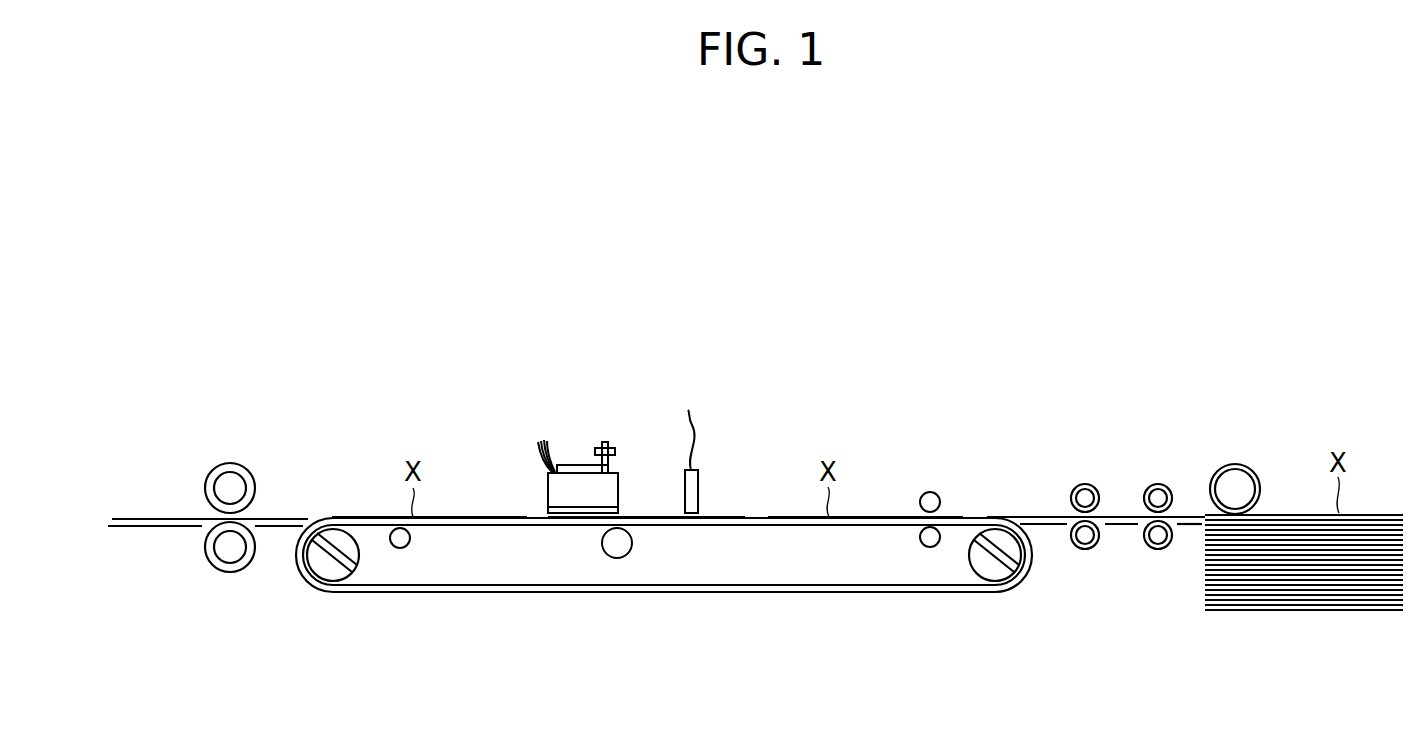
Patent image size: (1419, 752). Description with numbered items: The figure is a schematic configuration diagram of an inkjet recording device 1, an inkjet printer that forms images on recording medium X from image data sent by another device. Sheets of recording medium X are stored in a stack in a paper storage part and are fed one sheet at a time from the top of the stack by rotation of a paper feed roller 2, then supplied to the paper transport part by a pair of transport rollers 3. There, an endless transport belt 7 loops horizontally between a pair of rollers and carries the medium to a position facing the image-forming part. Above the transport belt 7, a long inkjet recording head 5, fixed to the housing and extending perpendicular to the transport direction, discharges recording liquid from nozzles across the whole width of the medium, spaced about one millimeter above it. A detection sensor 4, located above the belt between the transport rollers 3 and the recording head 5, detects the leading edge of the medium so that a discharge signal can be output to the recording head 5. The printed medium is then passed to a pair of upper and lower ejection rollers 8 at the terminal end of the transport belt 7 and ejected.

The inkjet recording device 1 is at (943, 243).
The paper feed roller 2 is at (1235, 463).
The pair of transport rollers 3 is at (1085, 484).
The detection sensor 4 is at (693, 488).
The inkjet recording head 5 is at (556, 487).
The transport belt 7 is at (720, 593).
The pair of ejection rollers 8 is at (252, 488).